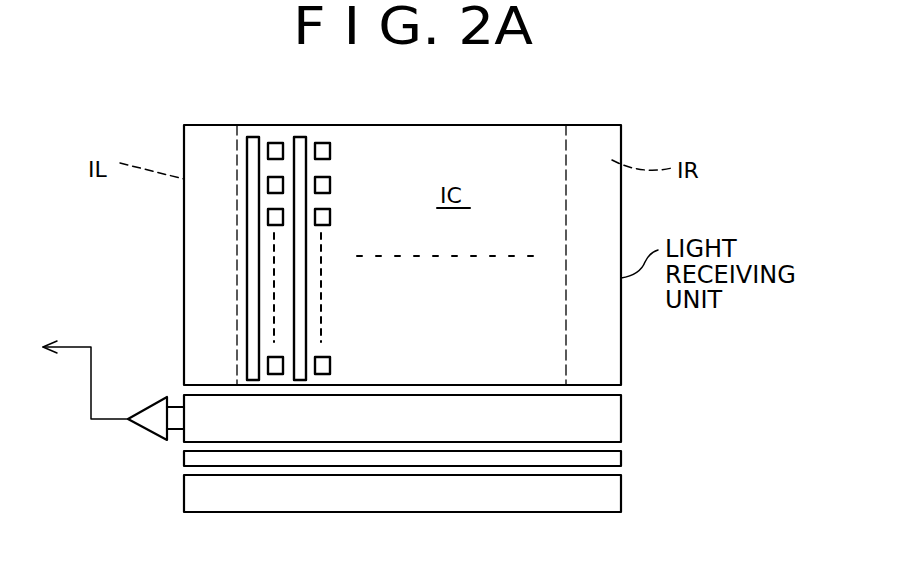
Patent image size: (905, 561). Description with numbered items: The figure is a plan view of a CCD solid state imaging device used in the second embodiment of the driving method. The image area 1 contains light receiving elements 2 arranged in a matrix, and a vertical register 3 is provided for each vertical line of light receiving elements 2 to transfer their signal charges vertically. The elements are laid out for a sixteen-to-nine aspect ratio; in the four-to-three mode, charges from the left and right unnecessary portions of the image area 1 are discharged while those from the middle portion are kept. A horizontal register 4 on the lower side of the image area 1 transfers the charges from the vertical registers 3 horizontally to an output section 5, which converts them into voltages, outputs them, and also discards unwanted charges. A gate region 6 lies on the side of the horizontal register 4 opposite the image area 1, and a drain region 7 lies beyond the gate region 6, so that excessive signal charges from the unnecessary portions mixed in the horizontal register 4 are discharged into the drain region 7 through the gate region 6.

The image area 1 is at (604, 124).
The light receiving element 2 is at (281, 179).
The vertical register 3 is at (255, 136).
The horizontal register 4 is at (608, 413).
The output section 5 is at (150, 402).
The gate region 6 is at (184, 458).
The drain region 7 is at (184, 497).